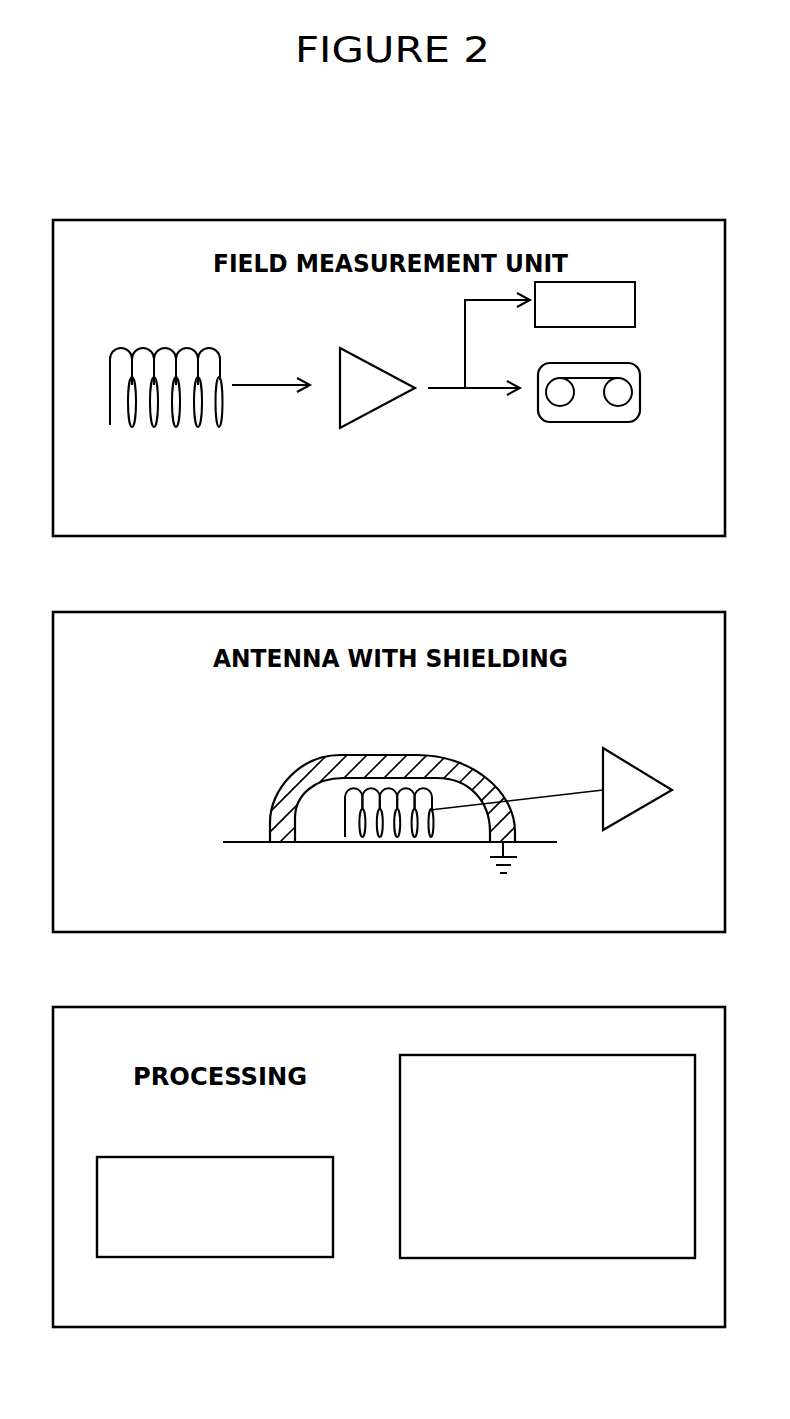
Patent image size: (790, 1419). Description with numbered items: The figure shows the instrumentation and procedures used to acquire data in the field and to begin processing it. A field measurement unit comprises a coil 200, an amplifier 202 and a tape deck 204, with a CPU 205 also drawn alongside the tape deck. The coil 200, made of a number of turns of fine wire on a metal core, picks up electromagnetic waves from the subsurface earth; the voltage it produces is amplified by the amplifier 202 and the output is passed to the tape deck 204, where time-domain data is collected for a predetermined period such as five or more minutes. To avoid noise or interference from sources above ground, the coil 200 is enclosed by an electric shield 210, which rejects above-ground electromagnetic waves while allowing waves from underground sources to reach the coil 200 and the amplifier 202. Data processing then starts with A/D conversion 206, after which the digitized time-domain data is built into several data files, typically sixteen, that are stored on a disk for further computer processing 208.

The coil 200 is at (292, 877).
The amplifier 202 is at (485, 612).
The tape deck 204 is at (589, 444).
The CPU 205 is at (585, 317).
The A/D conversion 206 is at (215, 1230).
The computer processing 208 is at (547, 1179).
The electric shield 210 is at (453, 740).